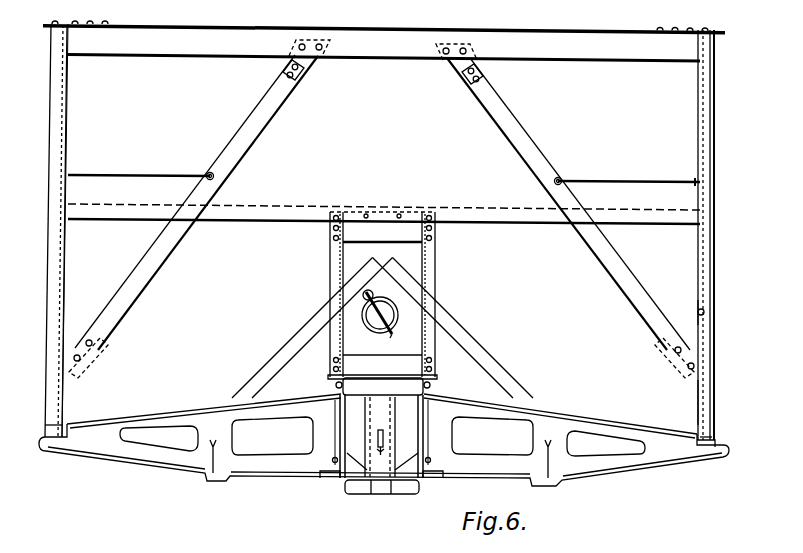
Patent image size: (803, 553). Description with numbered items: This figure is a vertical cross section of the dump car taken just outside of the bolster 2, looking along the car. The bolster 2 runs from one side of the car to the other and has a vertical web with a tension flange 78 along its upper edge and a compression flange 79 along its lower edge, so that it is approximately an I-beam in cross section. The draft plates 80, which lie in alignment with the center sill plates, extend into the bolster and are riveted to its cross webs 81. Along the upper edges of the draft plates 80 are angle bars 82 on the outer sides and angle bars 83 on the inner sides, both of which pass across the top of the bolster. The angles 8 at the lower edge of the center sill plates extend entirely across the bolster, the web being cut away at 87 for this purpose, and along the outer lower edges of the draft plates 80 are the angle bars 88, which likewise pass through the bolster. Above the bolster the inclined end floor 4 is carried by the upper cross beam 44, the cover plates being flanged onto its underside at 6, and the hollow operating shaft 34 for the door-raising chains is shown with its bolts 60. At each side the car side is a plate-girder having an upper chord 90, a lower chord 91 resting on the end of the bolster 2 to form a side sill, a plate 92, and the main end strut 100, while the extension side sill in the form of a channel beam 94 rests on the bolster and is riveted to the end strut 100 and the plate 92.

The bolster 2 is at (382, 453).
The inclined end floor 4 is at (384, 76).
The flanged end of cover plate 6 is at (450, 323).
The angles 8 is at (368, 485).
The operating shaft 34 is at (391, 314).
The upper cross beam 44 is at (384, 38).
The bolts 60 is at (373, 324).
The tension flange 78 is at (607, 422).
The compression flange 79 is at (620, 478).
The draft plates 80 is at (340, 437).
The cross webs 81 is at (340, 408).
The angle bars 82 is at (337, 377).
The angle bars 83 is at (353, 392).
The cut-away portion of web 87 is at (343, 483).
The angle bars 88 is at (323, 480).
The upper chord 90 is at (712, 36).
The lower chord 91 is at (708, 440).
The plate 92 is at (705, 312).
The channel beam 94 is at (698, 403).
The main end strut 100 is at (712, 211).